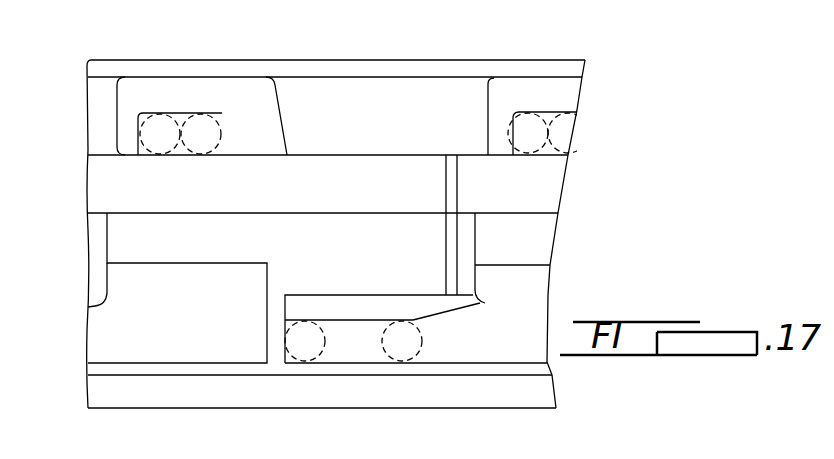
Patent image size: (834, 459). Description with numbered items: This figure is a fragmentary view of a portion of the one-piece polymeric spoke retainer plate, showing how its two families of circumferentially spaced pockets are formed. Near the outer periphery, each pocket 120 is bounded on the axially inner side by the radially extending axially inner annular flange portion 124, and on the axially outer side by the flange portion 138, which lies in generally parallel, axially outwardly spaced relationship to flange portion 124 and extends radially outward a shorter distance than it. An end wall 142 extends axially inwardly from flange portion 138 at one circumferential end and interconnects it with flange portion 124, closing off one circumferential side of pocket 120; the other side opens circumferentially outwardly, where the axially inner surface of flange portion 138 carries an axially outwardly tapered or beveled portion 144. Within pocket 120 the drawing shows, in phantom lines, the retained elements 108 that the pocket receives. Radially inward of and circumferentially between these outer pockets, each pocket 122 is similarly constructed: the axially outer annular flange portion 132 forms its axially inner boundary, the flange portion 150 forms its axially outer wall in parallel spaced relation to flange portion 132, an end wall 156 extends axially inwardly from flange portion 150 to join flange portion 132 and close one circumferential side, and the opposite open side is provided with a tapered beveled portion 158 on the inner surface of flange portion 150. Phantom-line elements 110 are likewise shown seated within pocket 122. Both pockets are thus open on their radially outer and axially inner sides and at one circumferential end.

The axially outer wall or flange portion 150 is at (152, 82).
The upper ball bearings 110 is at (193, 123).
The pockets 122 is at (229, 124).
The tapered beveled portion 158 is at (270, 112).
The end wall 156 is at (132, 130).
The axially outer annular flange portion 132 is at (548, 182).
The axially outer wall or flange portion 138 is at (318, 308).
The lower ball bearings 108 is at (397, 333).
The tapered or beveled portion 144 is at (446, 312).
The end wall 142 is at (278, 332).
The pockets 120 is at (350, 343).
The axially inner annular flange portion 124 is at (480, 368).